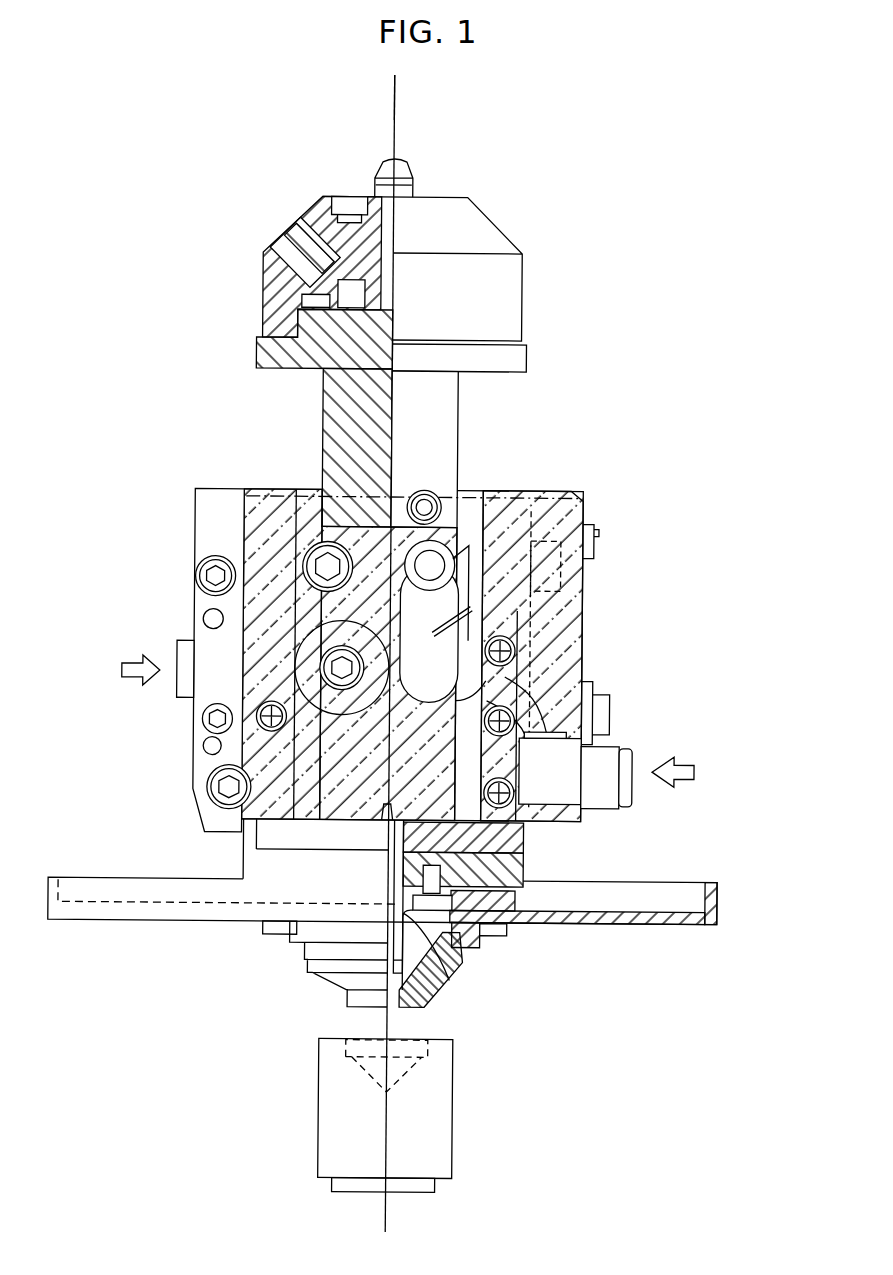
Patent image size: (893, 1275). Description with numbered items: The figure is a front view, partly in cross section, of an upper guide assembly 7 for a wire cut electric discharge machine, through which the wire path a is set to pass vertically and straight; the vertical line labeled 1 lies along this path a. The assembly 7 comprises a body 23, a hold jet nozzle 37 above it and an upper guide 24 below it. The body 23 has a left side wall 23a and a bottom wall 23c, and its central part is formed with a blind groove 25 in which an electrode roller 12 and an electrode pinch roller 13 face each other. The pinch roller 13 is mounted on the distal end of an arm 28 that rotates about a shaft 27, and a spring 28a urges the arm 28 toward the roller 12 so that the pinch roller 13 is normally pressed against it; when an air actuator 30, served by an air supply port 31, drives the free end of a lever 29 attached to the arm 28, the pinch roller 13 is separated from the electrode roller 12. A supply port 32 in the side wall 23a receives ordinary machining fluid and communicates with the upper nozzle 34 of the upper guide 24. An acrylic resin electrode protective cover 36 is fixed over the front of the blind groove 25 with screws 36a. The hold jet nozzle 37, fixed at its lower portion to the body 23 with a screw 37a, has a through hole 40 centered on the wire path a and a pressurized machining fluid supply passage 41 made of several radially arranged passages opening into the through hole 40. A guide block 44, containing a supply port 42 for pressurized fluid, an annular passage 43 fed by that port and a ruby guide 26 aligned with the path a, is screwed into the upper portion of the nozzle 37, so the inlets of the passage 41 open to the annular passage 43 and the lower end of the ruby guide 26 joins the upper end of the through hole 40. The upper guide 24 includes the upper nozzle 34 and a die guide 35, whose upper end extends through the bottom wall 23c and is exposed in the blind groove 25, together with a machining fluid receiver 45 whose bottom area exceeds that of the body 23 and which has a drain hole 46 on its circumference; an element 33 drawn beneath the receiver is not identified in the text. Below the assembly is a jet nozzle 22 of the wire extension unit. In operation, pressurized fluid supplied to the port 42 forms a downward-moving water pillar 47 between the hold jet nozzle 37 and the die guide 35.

The apparatus 1 is at (390, 112).
The wire path a is at (392, 79).
The upper guide assembly 7 is at (600, 278).
The electrode roller 12 is at (298, 672).
The electrode pinch roller 13 is at (516, 650).
The jet nozzle 22 is at (458, 1140).
The body 23 is at (194, 493).
The left side wall 23a is at (205, 512).
The bottom wall 23c is at (278, 845).
The upper guide 24 is at (290, 968).
The blind groove 25 is at (311, 510).
The ruby guide 26 is at (405, 193).
The shaft 27 is at (448, 556).
The arm 28 is at (462, 620).
The spring 28a is at (470, 660).
The lever 29 is at (470, 575).
The air actuator 30 is at (562, 708).
The air supply port 31 is at (654, 763).
The supply port 32 is at (145, 660).
The sleeve 33 is at (480, 948).
The upper nozzle 34 is at (452, 982).
The die guide 35 is at (405, 843).
The electrode protective cover 36 is at (250, 540).
The screws 36a is at (247, 747).
The hold jet nozzle 37 is at (447, 413).
The screw 37a is at (434, 500).
The through hole 40 is at (393, 440).
The pressurized machining fluid supply passage 41 is at (365, 358).
The supply port 42 is at (300, 247).
The annular passage 43 is at (326, 272).
The guide block 44 is at (485, 233).
The machining fluid receiver 45 is at (721, 900).
The drain hole 46 is at (682, 925).
The water pillar 47 is at (250, 845).